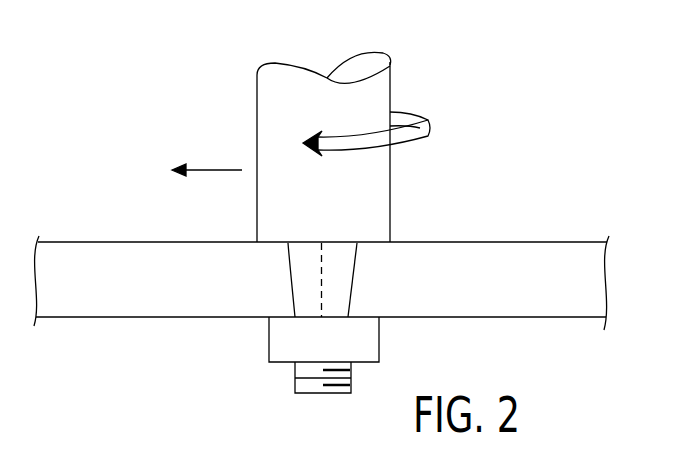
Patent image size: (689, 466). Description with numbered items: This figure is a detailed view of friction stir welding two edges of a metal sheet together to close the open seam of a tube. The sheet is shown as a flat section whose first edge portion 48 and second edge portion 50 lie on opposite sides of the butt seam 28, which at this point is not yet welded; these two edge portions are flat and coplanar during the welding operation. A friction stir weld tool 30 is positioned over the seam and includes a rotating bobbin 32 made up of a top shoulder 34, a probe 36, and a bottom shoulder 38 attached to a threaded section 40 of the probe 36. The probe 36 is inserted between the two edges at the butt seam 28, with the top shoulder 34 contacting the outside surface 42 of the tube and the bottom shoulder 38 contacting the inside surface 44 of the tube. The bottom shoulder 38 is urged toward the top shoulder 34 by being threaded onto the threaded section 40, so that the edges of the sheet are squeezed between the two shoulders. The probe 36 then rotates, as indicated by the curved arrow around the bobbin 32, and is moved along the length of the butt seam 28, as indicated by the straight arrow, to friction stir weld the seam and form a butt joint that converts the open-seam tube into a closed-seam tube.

The butt seam 28 is at (322, 278).
The friction stir weld tool 30 is at (401, 74).
The rotating bobbin 32 is at (375, 180).
The top shoulder 34 is at (286, 240).
The probe 36 is at (337, 250).
The bottom shoulder 38 is at (273, 342).
The threaded section 40 is at (307, 390).
The outside surface 42 is at (543, 241).
The inside surface 44 is at (537, 319).
The first edge portion 48 is at (457, 298).
The second edge portion 50 is at (87, 295).